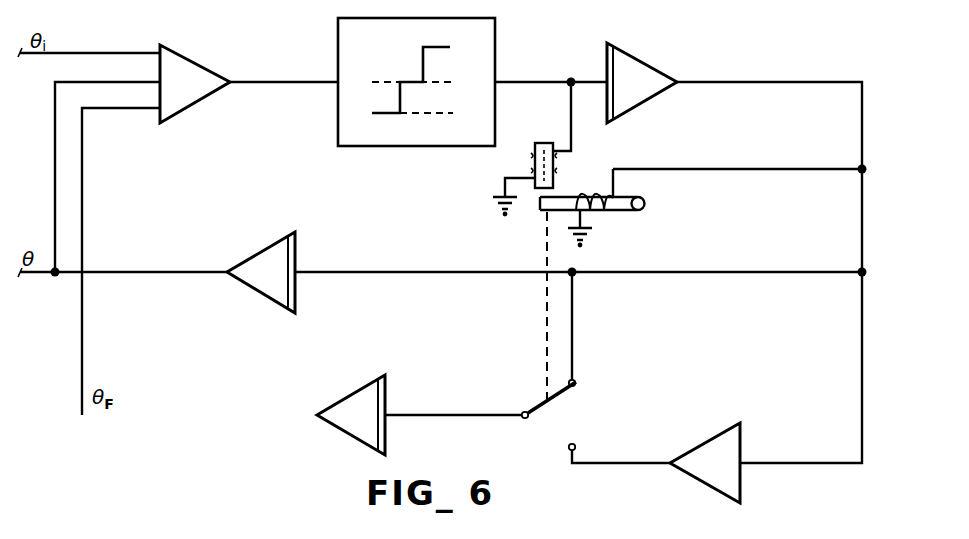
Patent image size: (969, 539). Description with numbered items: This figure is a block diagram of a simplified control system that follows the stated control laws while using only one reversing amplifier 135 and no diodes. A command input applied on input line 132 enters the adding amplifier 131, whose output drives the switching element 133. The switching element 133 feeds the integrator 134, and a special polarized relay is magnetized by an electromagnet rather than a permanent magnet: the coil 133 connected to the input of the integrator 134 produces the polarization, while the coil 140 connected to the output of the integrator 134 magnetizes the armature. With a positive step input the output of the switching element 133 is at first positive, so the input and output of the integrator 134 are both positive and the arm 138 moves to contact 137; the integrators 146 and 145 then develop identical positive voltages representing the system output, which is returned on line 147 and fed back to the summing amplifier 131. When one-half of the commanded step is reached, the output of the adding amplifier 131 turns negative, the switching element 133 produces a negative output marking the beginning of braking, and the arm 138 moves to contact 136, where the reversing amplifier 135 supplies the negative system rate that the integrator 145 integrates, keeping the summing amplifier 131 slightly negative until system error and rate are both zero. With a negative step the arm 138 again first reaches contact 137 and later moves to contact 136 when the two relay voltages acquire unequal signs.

The adding amplifier 131 is at (186, 51).
The input signal line theta_i 132 is at (75, 51).
The switching element 133 is at (338, 28).
The integrator 134 is at (635, 54).
The inverting amplifier (-1) 135 is at (699, 485).
The contact 136 is at (576, 446).
The contact 137 is at (576, 381).
The arm 138 is at (543, 404).
The coil 140 is at (613, 211).
The integrator 145 is at (338, 400).
The integrator 146 is at (261, 254).
The output signal line theta 147 is at (166, 275).